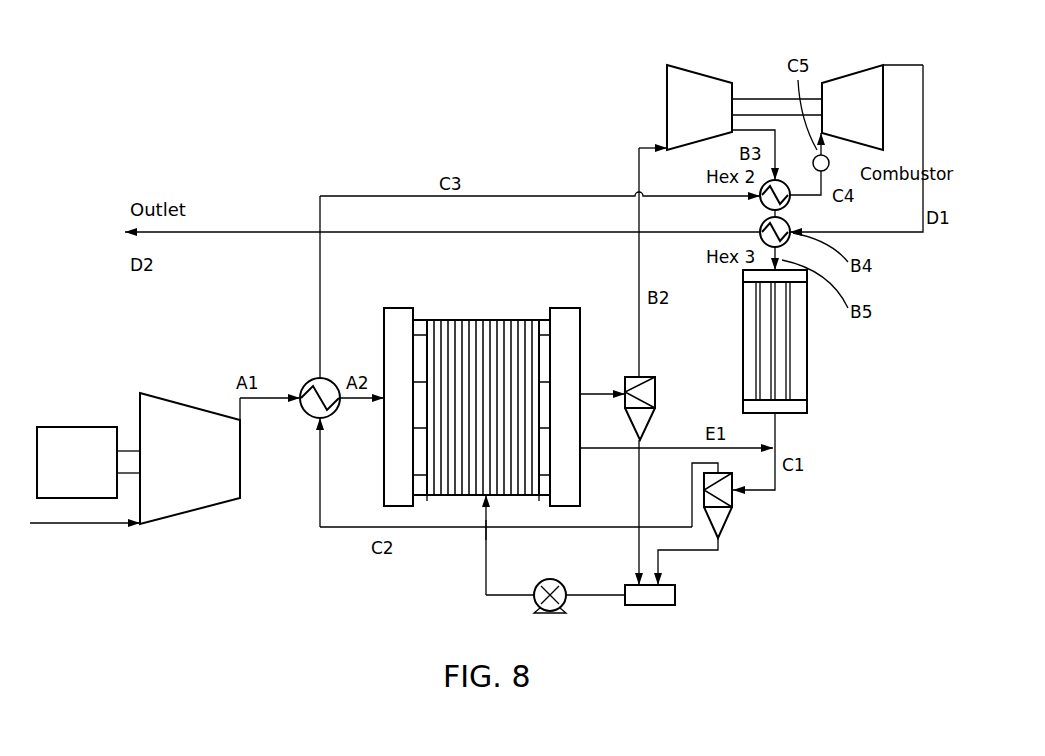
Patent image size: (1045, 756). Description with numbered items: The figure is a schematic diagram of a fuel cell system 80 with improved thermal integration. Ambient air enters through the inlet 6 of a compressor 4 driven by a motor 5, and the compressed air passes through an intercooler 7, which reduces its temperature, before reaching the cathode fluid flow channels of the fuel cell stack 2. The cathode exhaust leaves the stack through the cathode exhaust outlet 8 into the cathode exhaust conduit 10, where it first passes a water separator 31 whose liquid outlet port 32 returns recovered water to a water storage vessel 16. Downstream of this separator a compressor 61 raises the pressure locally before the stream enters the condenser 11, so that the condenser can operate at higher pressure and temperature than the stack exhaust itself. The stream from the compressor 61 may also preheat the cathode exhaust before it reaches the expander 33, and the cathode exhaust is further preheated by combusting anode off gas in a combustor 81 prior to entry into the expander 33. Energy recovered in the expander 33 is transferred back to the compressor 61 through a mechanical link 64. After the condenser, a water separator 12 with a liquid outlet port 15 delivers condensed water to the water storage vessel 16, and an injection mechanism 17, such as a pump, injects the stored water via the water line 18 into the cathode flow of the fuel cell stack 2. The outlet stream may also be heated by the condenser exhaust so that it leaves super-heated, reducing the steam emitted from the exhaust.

The fuel cell system 80 is at (228, 112).
The fuel cell stack 2 is at (470, 318).
The compressor 4 is at (188, 512).
The motor 5 is at (77, 427).
The inlet 6 is at (95, 525).
The intercooler 7 is at (308, 385).
The cathode exhaust outlet 8 is at (590, 400).
The cathode exhaust conduit 10 is at (320, 278).
The condenser 11 is at (808, 353).
The water separator 12 is at (735, 500).
The liquid outlet port 15 is at (722, 540).
The water storage vessel 16 is at (676, 595).
The injection mechanism 17 is at (535, 611).
The water line 18 is at (486, 522).
The water separator 31 is at (664, 390).
The liquid outlet port 32 is at (648, 425).
The expander 33 is at (852, 72).
The compressor 61 is at (688, 65).
The mechanical link 64 is at (766, 99).
The combustor 81 is at (812, 165).